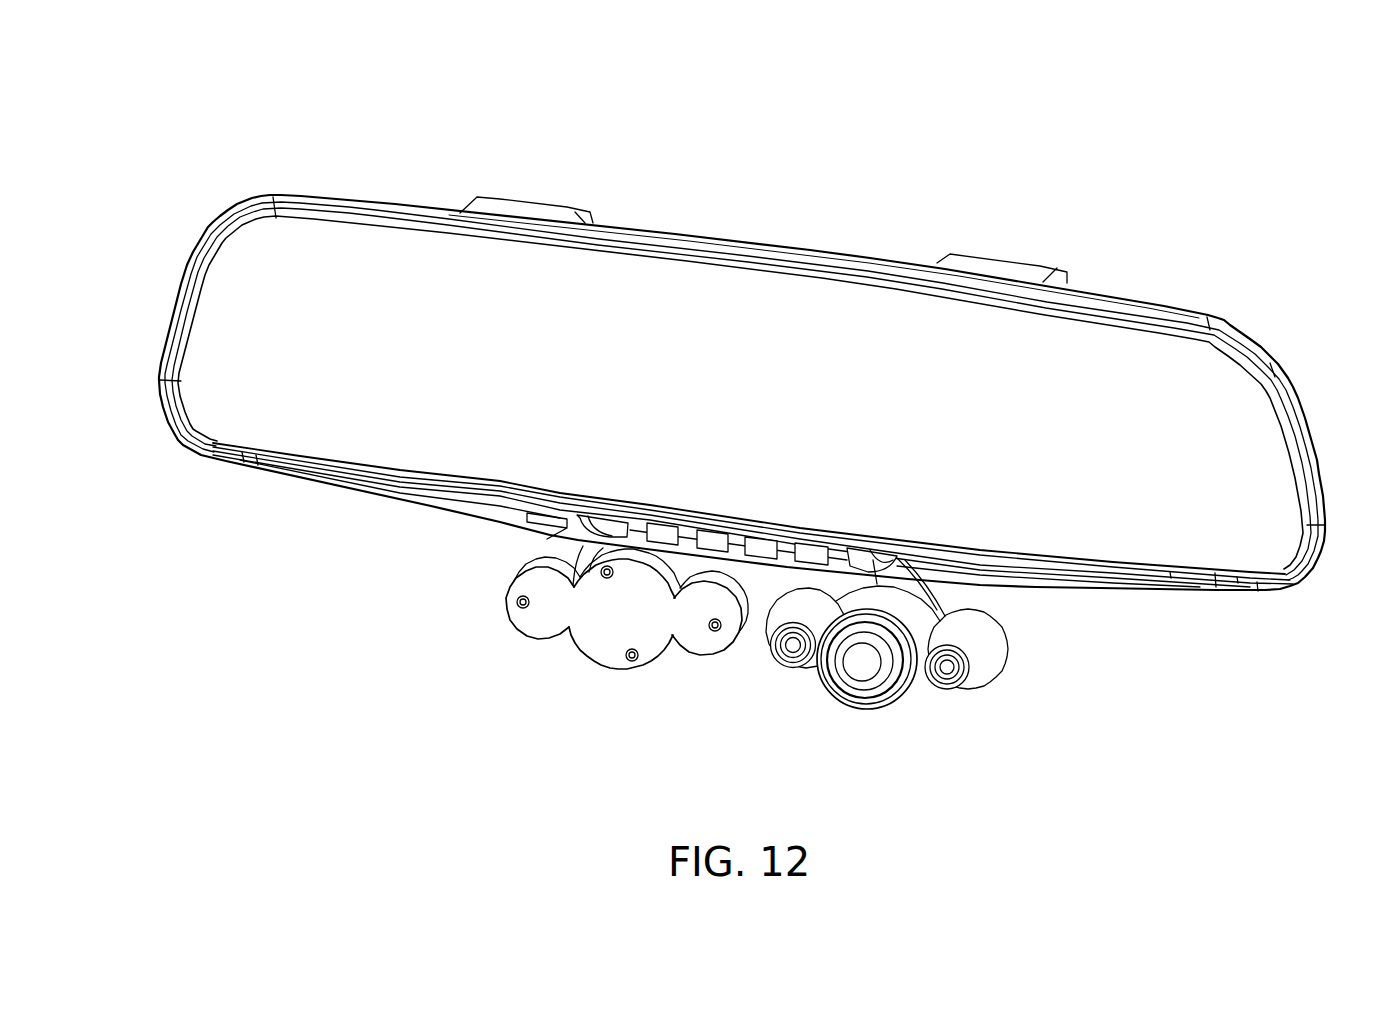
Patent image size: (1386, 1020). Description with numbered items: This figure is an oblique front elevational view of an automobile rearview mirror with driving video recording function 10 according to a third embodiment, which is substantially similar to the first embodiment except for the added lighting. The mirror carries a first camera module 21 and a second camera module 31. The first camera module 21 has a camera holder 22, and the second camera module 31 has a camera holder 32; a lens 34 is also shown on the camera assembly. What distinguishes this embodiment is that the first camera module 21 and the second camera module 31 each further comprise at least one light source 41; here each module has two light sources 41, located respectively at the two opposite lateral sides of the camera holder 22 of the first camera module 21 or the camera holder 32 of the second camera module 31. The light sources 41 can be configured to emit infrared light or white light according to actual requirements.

The automobile rearview mirror with driving video recording function 10 is at (742, 347).
The first camera module 21 is at (572, 550).
The camera holder 22 is at (961, 675).
The second camera module 31 is at (955, 602).
The camera holder 32 is at (673, 572).
The camera lens 34 is at (860, 668).
The light source 41 is at (790, 669).